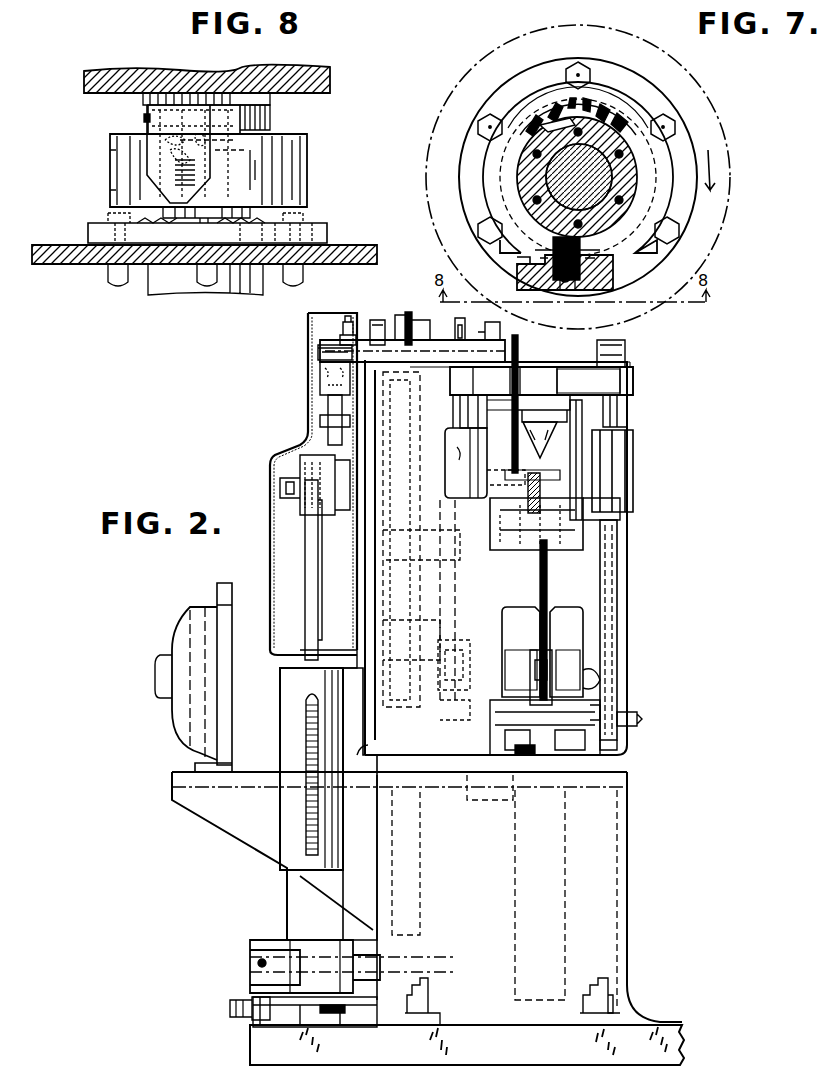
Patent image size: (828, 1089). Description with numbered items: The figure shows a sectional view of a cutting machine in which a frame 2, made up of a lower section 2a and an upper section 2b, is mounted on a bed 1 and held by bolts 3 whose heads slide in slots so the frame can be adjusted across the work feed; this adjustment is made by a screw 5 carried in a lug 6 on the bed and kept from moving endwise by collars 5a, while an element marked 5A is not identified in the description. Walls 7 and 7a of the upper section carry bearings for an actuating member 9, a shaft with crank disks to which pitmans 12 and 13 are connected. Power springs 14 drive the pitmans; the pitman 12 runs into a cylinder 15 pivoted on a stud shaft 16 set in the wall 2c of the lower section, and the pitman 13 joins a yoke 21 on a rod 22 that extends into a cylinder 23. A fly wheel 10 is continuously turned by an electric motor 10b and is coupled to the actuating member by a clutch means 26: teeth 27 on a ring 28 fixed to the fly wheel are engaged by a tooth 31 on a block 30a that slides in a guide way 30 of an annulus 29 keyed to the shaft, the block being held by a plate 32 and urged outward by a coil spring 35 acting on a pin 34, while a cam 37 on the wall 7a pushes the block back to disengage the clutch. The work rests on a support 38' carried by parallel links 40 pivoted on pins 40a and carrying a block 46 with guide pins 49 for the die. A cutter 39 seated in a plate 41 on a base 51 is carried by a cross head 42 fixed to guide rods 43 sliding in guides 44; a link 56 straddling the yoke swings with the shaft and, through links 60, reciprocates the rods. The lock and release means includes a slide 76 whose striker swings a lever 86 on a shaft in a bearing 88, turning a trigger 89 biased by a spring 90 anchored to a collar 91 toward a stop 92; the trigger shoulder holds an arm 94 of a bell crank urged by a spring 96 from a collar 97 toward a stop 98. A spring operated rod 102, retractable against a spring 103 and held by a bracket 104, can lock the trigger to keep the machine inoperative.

In FIG. 2, the bed 1 is at (424, 1058).
In FIG. 2, the frame 2 is at (427, 898).
In FIG. 2, the lower section of frame 2a is at (628, 813).
In FIG. 2, the upper section of frame 2b is at (458, 780).
In FIG. 2, the wall of frame section 2c is at (510, 590).
In FIG. 2, the bolts 3 is at (428, 997).
In FIG. 2, the screw 5 is at (322, 1029).
In FIG. 2, the collars 5a is at (250, 997).
In FIG. 2, the guide block 5A is at (495, 435).
In FIG. 2, the lug 6 is at (255, 1021).
In FIG. 2, the wall 7 is at (362, 769).
In FIG. 8, the wall 7a is at (86, 92).
In FIG. 7, the actuating member 9 is at (600, 175).
In FIG. 2, the actuating member 9 is at (445, 590).
In FIG. 8, the fly wheel 10 is at (353, 262).
In FIG. 7, the fly wheel 10 is at (721, 243).
In FIG. 2, the fly wheel 10 is at (405, 783).
In FIG. 2, the electric motor 10b is at (190, 736).
In FIG. 2, the pitman 12 is at (305, 629).
In FIG. 2, the pitman 13 is at (538, 641).
In FIG. 2, the power springs 14 is at (306, 838).
In FIG. 2, the cylinder 15 is at (280, 821).
In FIG. 2, the stud shaft 16 is at (248, 956).
In FIG. 2, the yoke 21 is at (553, 661).
In FIG. 2, the rod 22 is at (540, 759).
In FIG. 2, the cylinder 23 is at (514, 906).
In FIG. 8, the clutch means 26 is at (221, 175).
In FIG. 8, the annular series of teeth 27 is at (201, 231).
In FIG. 7, the annular series of teeth 27 is at (610, 110).
In FIG. 8, the ring 28 is at (88, 232).
In FIG. 7, the ring 28 is at (532, 76).
In FIG. 8, the annulus 29 is at (308, 162).
In FIG. 7, the annulus 29 is at (668, 203).
In FIG. 7, the guide way 30 is at (583, 245).
In FIG. 7, the block 30a is at (545, 250).
In FIG. 8, the tooth 31 is at (190, 231).
In FIG. 8, the plate 32 is at (205, 172).
In FIG. 7, the plate 32 is at (613, 274).
In FIG. 8, the pin 34 is at (247, 171).
In FIG. 8, the coil spring 35 is at (147, 172).
In FIG. 7, the coil spring 35 is at (570, 292).
In FIG. 8, the cam 37 is at (144, 118).
In FIG. 7, the cam 37 is at (520, 160).
In FIG. 2, the support 38' is at (570, 613).
In FIG. 2, the cutter 39 is at (548, 445).
In FIG. 2, the parallel links 40 is at (618, 697).
In FIG. 2, the pins 40a is at (638, 727).
In FIG. 2, the plate 41 is at (568, 414).
In FIG. 2, the cross head 42 is at (633, 379).
In FIG. 2, the guide rods 43 is at (628, 406).
In FIG. 2, the guides 44 is at (634, 464).
In FIG. 2, the block 46 is at (582, 475).
In FIG. 2, the pins 49 is at (460, 411).
In FIG. 2, the base 51 is at (560, 395).
In FIG. 2, the link 56 is at (590, 673).
In FIG. 2, the links 60 is at (499, 654).
In FIG. 2, the slide 76 is at (528, 485).
In FIG. 2, the lever 86 is at (508, 384).
In FIG. 2, the bearing 88 is at (428, 342).
In FIG. 2, the trigger 89 is at (318, 362).
In FIG. 2, the spring 90 is at (470, 340).
In FIG. 2, the collar 91 is at (500, 340).
In FIG. 2, the stop 92 is at (320, 375).
In FIG. 2, the arm of bell crank 94 is at (328, 410).
In FIG. 2, the spring 96 is at (312, 510).
In FIG. 2, the collar 97 is at (290, 463).
In FIG. 2, the stop 98 is at (322, 421).
In FIG. 2, the spring operated rod 102 is at (348, 316).
In FIG. 2, the spring 103 is at (378, 318).
In FIG. 2, the bracket 104 is at (358, 345).